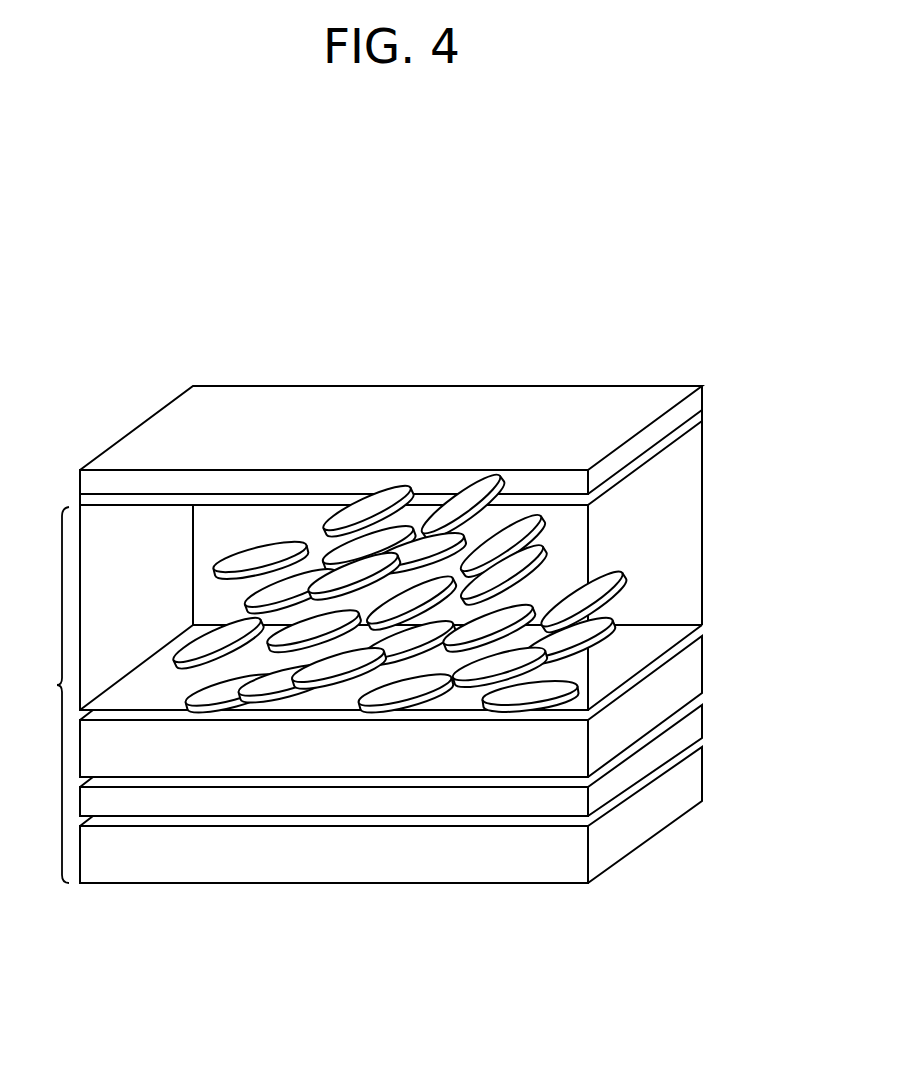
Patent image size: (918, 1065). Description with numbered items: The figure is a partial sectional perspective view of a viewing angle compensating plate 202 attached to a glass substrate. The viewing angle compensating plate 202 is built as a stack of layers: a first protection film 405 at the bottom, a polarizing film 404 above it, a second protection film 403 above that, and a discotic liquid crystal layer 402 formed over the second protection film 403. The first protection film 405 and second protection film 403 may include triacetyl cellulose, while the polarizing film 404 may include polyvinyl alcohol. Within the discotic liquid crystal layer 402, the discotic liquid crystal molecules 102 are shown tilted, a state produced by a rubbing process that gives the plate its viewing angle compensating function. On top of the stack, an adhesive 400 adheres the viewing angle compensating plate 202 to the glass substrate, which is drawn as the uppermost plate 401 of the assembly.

The discotic liquid crystal molecules 102 is at (617, 587).
The viewing angle compensating plate 202 is at (42, 695).
The adhesive 400 is at (693, 426).
The upper substrate 401 is at (693, 403).
The discotic liquid crystal layer 402 is at (693, 525).
The second protection film 403 is at (693, 668).
The polarizing film 404 is at (693, 723).
The first protection film 405 is at (693, 778).